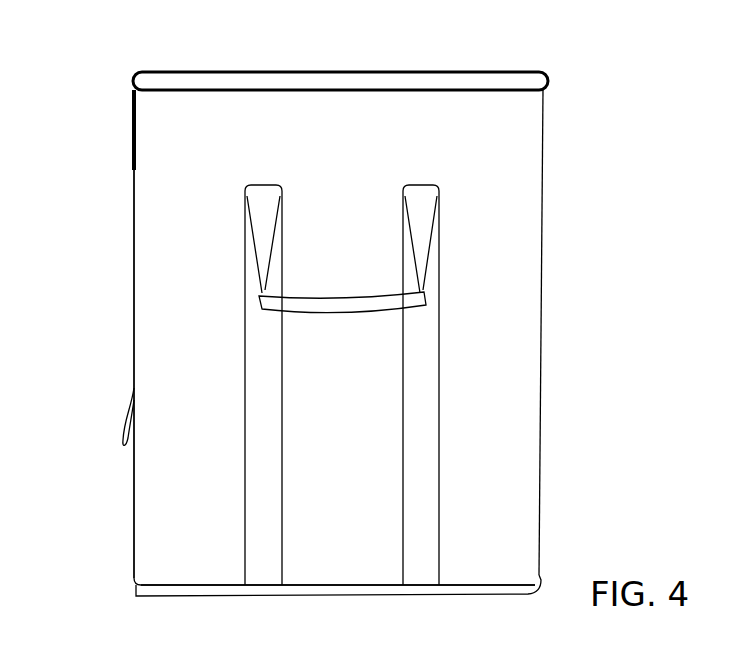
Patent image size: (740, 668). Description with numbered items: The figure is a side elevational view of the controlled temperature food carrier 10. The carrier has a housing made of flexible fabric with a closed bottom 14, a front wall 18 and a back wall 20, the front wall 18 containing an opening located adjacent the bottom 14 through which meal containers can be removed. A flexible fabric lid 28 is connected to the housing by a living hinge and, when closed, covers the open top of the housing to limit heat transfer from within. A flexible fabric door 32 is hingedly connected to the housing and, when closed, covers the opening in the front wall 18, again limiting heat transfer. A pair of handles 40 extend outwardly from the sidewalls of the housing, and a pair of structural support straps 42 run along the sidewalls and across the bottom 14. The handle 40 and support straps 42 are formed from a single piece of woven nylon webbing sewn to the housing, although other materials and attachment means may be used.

The controlled temperature food carrier 10 is at (622, 100).
The closed bottom 14 is at (370, 598).
The front wall 18 is at (133, 243).
The back wall 20 is at (543, 160).
The lid 28 is at (500, 70).
The door 32 is at (134, 512).
The handle 40 is at (392, 308).
The structural support strap 42 is at (432, 436).